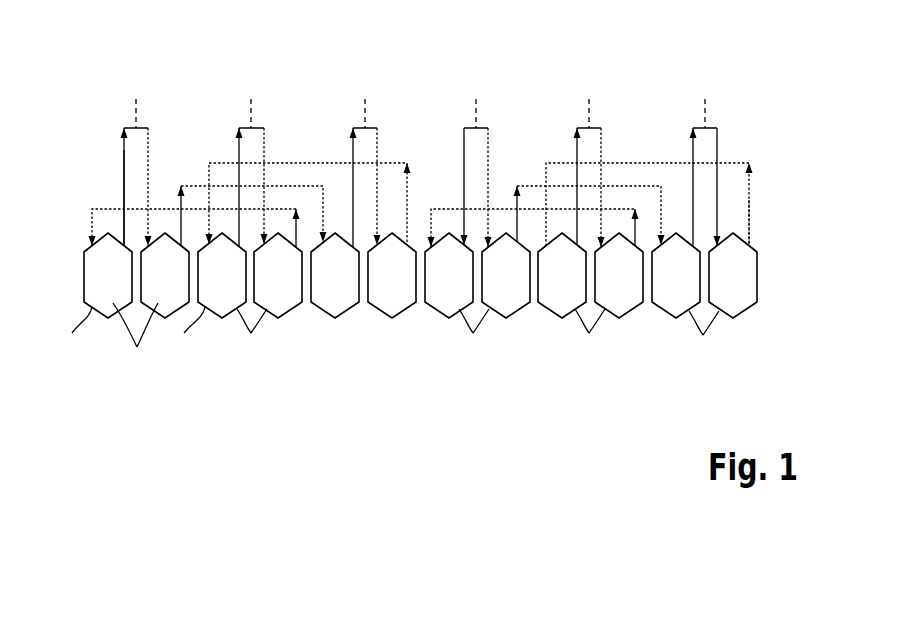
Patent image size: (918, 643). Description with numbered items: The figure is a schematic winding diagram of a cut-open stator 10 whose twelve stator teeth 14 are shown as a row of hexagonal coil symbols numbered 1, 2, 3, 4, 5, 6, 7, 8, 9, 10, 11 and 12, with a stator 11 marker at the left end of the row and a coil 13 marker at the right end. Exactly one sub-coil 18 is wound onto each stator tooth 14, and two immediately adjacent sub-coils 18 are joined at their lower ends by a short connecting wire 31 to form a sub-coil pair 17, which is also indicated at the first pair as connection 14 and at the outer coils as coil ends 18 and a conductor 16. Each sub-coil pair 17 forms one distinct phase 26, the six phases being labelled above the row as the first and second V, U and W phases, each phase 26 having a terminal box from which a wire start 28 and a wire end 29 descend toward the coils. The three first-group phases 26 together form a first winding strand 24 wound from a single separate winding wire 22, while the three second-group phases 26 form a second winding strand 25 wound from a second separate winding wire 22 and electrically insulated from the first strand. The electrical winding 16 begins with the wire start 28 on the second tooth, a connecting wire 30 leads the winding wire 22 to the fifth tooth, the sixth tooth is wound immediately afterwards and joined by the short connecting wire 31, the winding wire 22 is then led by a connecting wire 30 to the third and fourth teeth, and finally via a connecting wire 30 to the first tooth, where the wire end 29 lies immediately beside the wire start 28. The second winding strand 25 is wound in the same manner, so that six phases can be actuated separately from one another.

The coil 1 is at (108, 275).
The coil 2 is at (165, 275).
The coil 3 is at (222, 275).
The coil 4 is at (278, 275).
The coil 5 is at (335, 275).
The coil 6 is at (392, 275).
The coil 7 is at (449, 275).
The coil 8 is at (506, 275).
The coil 9 is at (562, 275).
The stator 10 is at (619, 275).
The stator winding 11 is at (79, 273).
The coil 12 is at (733, 275).
The coil 13 is at (770, 268).
The stator tooth 14 is at (135, 337).
The electrical winding 16 is at (763, 219).
The sub-coil pair 17 is at (478, 336).
The sub-coil 18 is at (128, 335).
The winding wire 22 is at (124, 158).
The first winding strand 24 is at (329, 337).
The second winding strand 25 is at (631, 342).
The phase 26 is at (136, 73).
The wire start 28 is at (149, 153).
The wire end 29 is at (124, 142).
The connecting wire 30 is at (110, 209).
The short connecting wire 31 is at (141, 128).